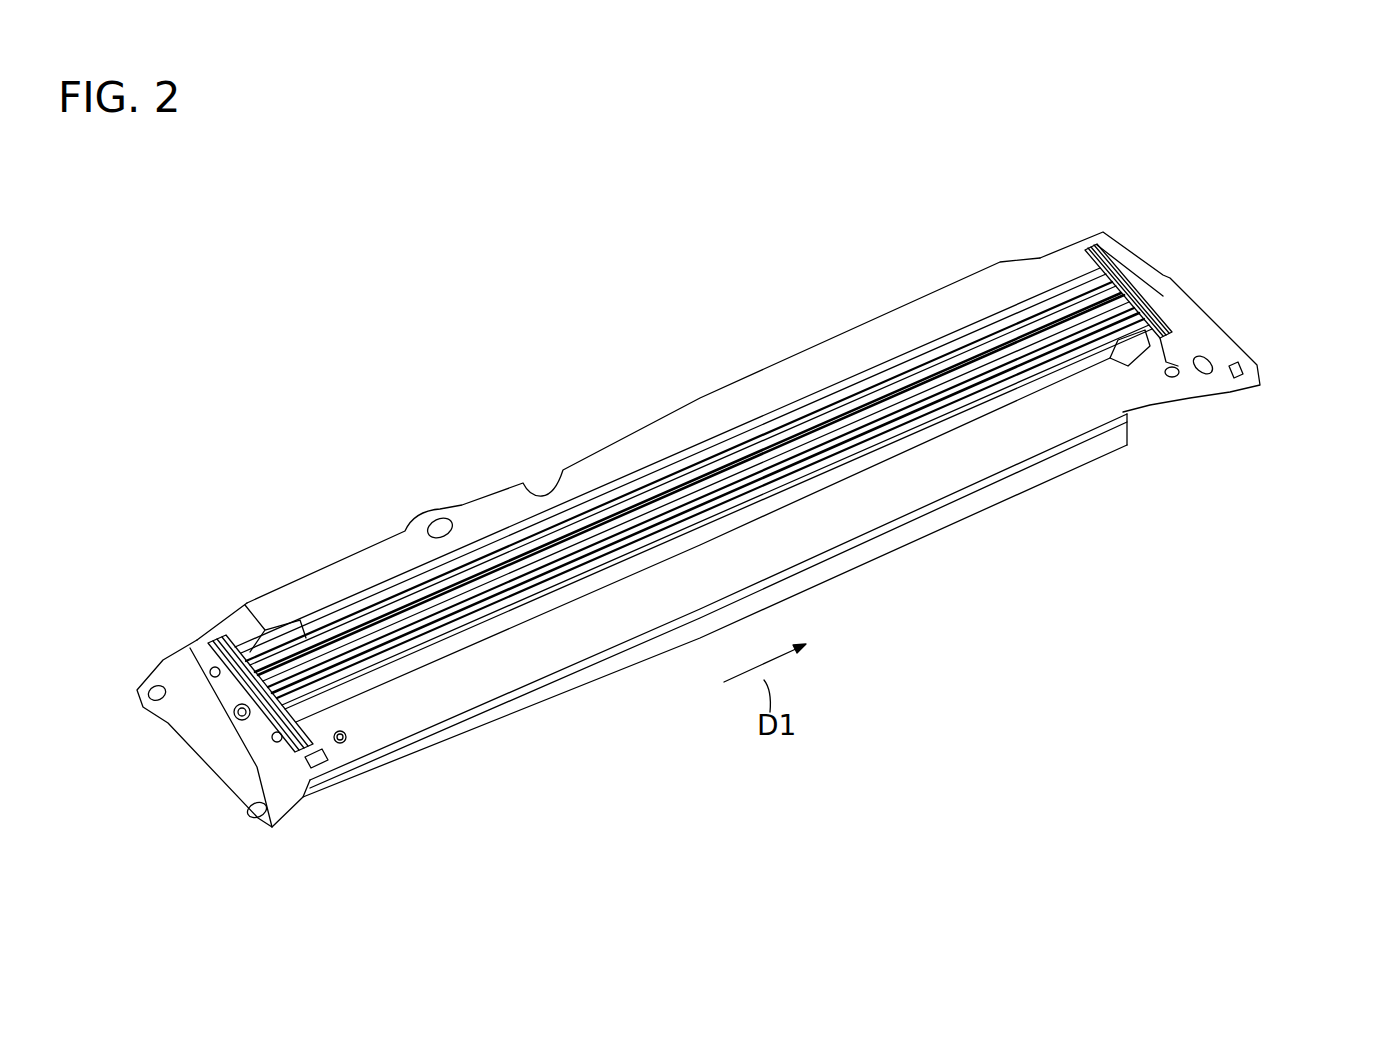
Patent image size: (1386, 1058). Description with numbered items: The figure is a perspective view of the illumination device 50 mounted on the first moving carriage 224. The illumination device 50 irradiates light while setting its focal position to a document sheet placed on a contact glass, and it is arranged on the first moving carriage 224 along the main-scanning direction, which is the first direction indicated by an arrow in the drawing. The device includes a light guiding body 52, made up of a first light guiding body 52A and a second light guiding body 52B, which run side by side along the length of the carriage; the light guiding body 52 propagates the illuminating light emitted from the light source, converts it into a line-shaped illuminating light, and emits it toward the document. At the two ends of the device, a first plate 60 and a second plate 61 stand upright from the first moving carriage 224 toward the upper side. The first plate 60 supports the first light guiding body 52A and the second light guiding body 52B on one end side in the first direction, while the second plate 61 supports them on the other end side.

The illumination device 50 is at (951, 304).
The light guiding body 52 is at (693, 483).
The first light guiding body 52A is at (625, 520).
The second light guiding body 52B is at (710, 500).
The first plate 60 is at (1120, 252).
The second plate 61 is at (194, 645).
The first moving carriage 224 is at (1204, 343).